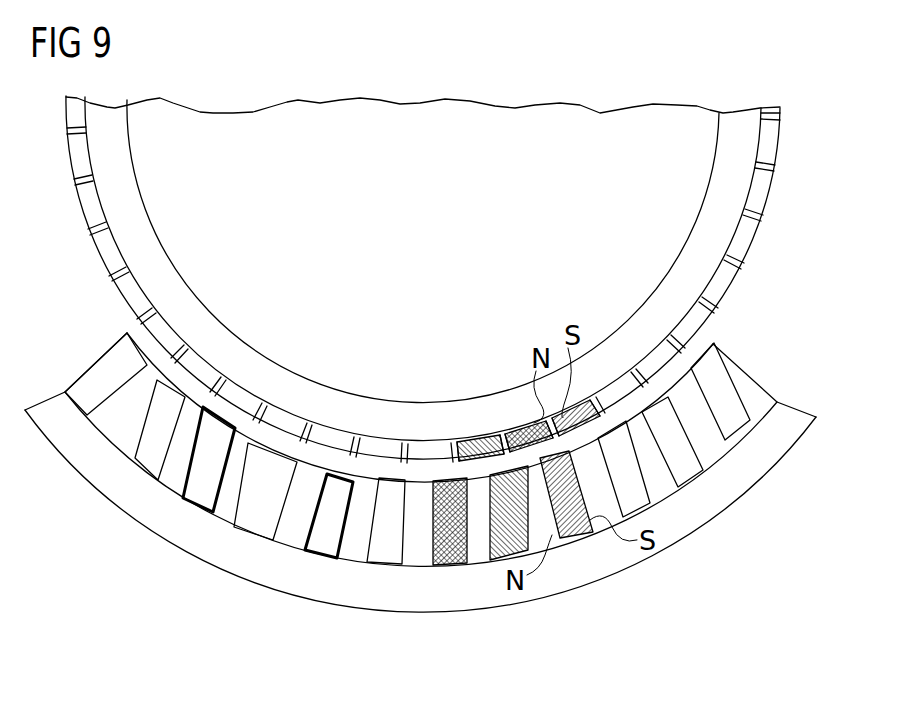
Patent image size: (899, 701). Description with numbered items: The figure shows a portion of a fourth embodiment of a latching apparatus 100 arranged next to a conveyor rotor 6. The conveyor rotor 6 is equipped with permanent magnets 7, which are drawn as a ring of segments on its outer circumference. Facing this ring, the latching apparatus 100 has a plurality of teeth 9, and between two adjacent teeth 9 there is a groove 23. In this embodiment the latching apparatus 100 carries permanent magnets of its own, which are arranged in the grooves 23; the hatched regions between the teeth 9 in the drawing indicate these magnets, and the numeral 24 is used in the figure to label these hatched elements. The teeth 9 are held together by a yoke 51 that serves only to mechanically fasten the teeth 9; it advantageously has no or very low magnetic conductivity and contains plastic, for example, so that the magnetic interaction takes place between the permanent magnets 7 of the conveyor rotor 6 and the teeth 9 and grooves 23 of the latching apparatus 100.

The conveyor rotor 6 is at (745, 148).
The permanent magnets 7 is at (745, 245).
The teeth 9 is at (703, 438).
The groove 23 is at (697, 482).
The coil winding 24 is at (262, 523).
The yoke 51 is at (95, 477).
The latching apparatus 100 is at (446, 479).